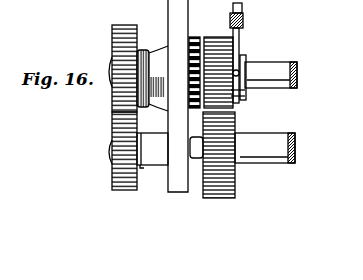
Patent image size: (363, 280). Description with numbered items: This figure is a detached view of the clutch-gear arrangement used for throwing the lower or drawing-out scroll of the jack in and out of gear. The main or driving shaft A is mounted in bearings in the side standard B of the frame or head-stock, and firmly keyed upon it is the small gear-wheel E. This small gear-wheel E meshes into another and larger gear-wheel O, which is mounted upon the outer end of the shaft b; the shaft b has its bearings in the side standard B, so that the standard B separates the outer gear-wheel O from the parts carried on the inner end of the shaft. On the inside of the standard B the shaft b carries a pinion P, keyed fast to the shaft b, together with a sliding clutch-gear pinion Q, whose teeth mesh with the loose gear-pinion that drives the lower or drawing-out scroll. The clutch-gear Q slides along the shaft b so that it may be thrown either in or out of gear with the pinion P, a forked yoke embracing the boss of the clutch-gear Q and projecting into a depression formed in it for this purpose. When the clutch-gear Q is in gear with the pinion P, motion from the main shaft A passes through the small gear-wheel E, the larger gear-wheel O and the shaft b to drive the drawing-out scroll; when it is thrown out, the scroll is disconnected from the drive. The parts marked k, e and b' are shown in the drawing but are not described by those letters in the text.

The gear-wheel O is at (123, 62).
The small gear-wheel E is at (112, 151).
The shaft b is at (152, 78).
The side standard B is at (178, 96).
The pinion P is at (196, 64).
The sliding clutch-gear pinion Q is at (218, 66).
The main or driving shaft A is at (242, 155).
The shaft k is at (268, 77).
The rod e is at (238, 50).
The knob b' is at (246, 15).